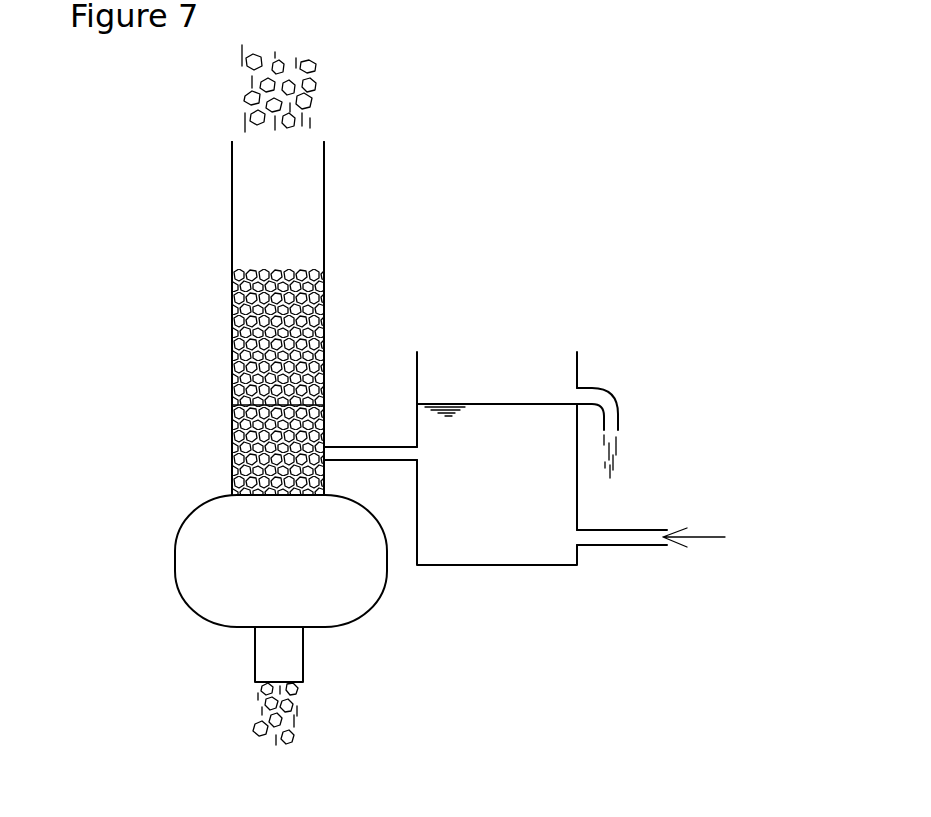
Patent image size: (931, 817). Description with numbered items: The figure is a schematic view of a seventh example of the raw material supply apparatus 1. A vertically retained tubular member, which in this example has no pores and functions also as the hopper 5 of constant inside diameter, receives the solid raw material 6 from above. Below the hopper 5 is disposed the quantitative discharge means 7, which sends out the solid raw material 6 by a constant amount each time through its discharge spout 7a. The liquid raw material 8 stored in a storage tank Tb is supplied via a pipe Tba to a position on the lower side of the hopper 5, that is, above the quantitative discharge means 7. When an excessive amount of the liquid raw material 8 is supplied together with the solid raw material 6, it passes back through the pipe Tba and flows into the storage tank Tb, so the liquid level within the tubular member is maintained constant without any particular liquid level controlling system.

The raw material supply apparatus 1 is at (232, 212).
The hopper 5 is at (324, 196).
The solid raw material 6 is at (316, 88).
The quantitative discharge means 7 is at (178, 533).
The discharge spout 7a is at (300, 653).
The liquid raw material 8 is at (468, 422).
The storage tank Tb is at (529, 567).
The pipe Tba is at (363, 447).